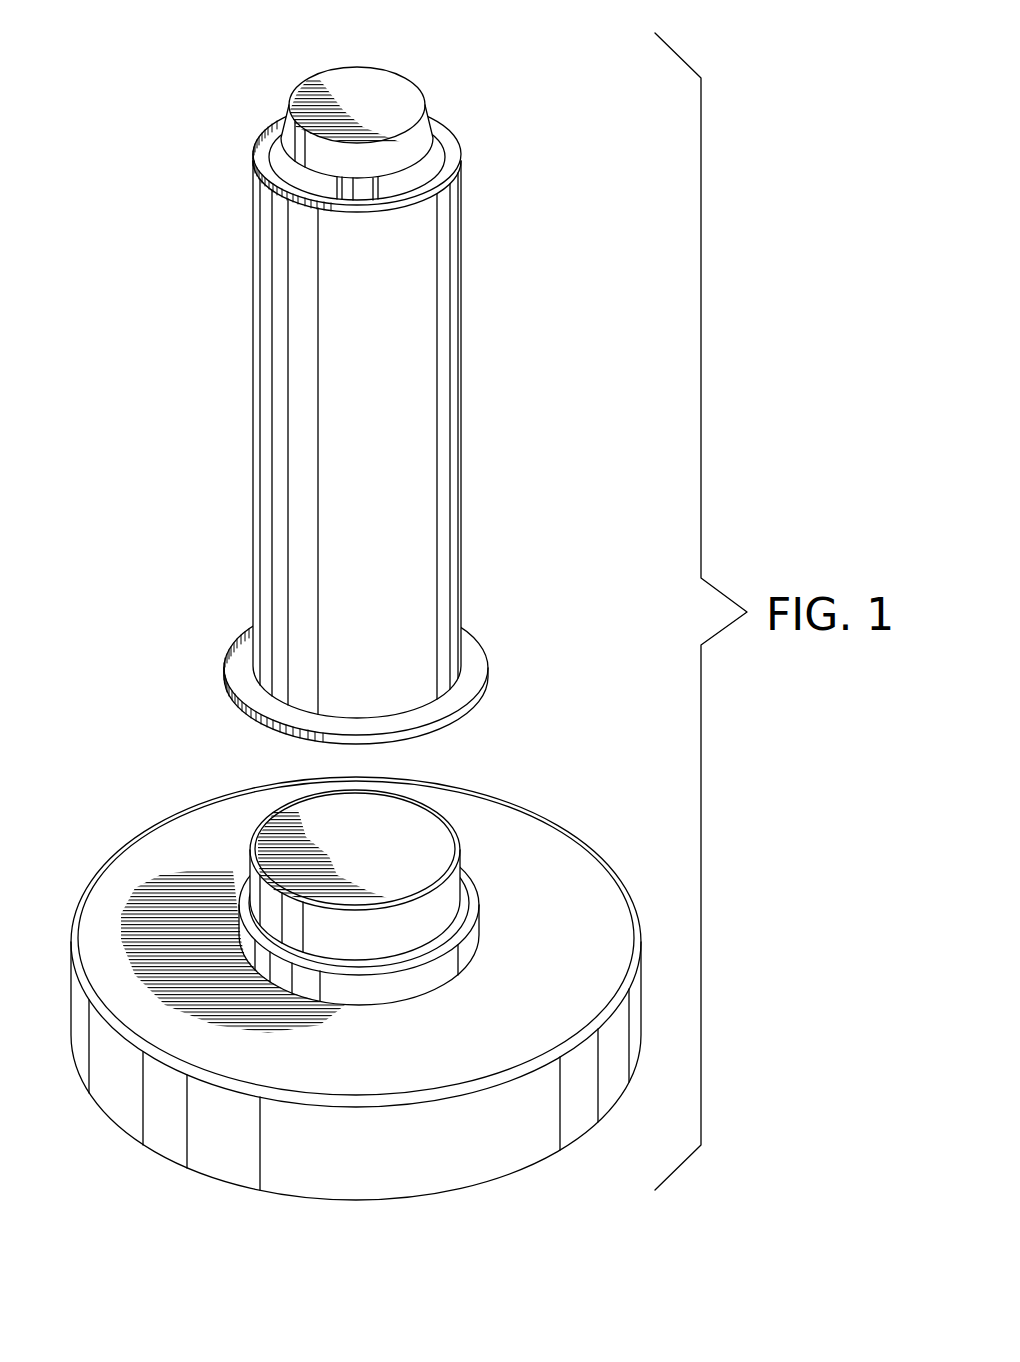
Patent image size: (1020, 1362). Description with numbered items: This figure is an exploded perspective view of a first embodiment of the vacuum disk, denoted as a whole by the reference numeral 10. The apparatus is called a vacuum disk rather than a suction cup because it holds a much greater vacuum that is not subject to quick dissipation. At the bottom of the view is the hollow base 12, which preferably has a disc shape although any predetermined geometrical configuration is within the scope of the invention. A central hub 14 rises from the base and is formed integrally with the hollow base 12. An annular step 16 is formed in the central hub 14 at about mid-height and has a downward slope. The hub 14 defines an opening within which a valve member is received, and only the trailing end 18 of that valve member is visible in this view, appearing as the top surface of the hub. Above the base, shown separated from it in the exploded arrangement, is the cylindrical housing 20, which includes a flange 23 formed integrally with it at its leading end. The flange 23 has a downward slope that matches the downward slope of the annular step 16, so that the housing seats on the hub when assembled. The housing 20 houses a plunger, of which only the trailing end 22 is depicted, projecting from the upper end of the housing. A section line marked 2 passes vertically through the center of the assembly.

The section line 2- 2 is at (356, 8).
The vacuum disk apparatus 10 is at (721, 142).
The hollow base 12 is at (154, 810).
The central hub 14 is at (483, 880).
The annular step 16 is at (403, 962).
The trailing end of valve member 18 is at (375, 864).
The cylindrical housing 20 is at (470, 287).
The trailing end of plunger 22 is at (401, 104).
The flange 23 is at (481, 656).